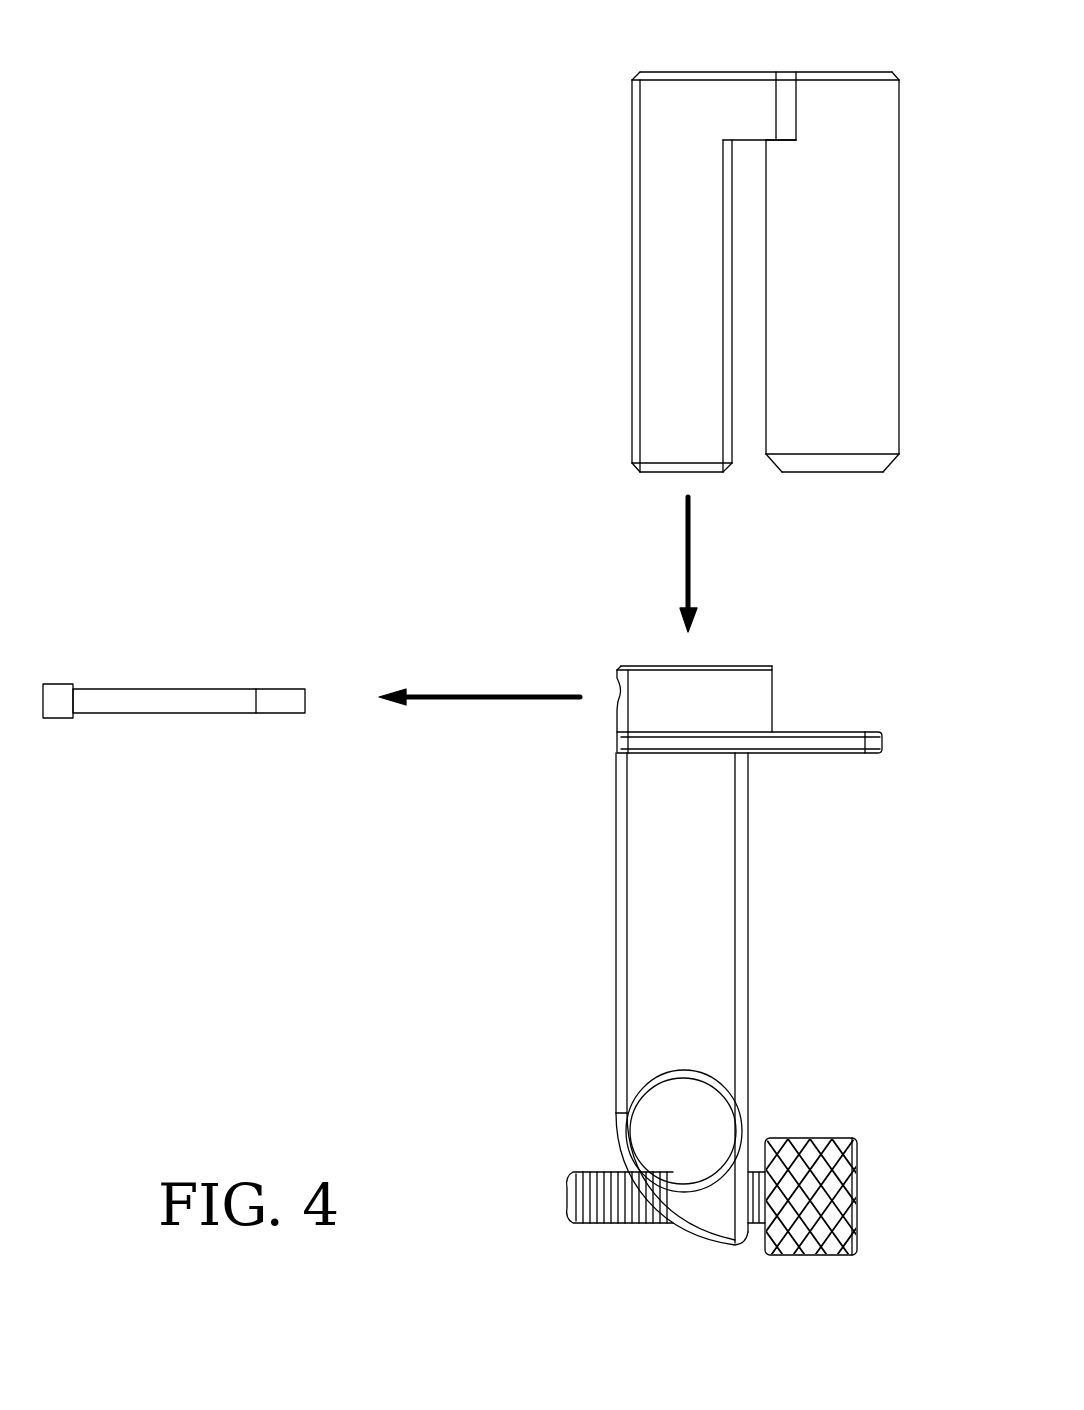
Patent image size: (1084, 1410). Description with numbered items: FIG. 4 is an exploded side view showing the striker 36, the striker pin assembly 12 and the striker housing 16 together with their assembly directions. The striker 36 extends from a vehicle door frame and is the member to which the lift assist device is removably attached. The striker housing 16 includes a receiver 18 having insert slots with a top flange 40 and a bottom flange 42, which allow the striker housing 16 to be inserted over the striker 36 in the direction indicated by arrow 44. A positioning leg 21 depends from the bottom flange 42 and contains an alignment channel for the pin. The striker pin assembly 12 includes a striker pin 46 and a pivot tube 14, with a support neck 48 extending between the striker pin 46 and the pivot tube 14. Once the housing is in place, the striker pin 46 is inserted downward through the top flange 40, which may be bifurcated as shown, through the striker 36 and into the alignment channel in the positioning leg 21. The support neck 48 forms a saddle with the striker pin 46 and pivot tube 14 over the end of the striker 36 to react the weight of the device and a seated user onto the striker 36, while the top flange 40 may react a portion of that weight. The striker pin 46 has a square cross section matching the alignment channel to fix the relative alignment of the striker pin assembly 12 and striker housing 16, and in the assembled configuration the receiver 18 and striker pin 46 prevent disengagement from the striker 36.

The striker pin assembly 12 is at (607, 330).
The pivot tube 14 is at (858, 305).
The striker housing 16 is at (589, 969).
The receiver 18 is at (738, 703).
The positioning leg 21 is at (672, 895).
The striker 36 is at (178, 687).
The top flange 40 is at (721, 665).
The bottom flange 42 is at (692, 746).
The arrow 44 is at (487, 692).
The striker pin 46 is at (667, 255).
The support neck 48 is at (759, 107).